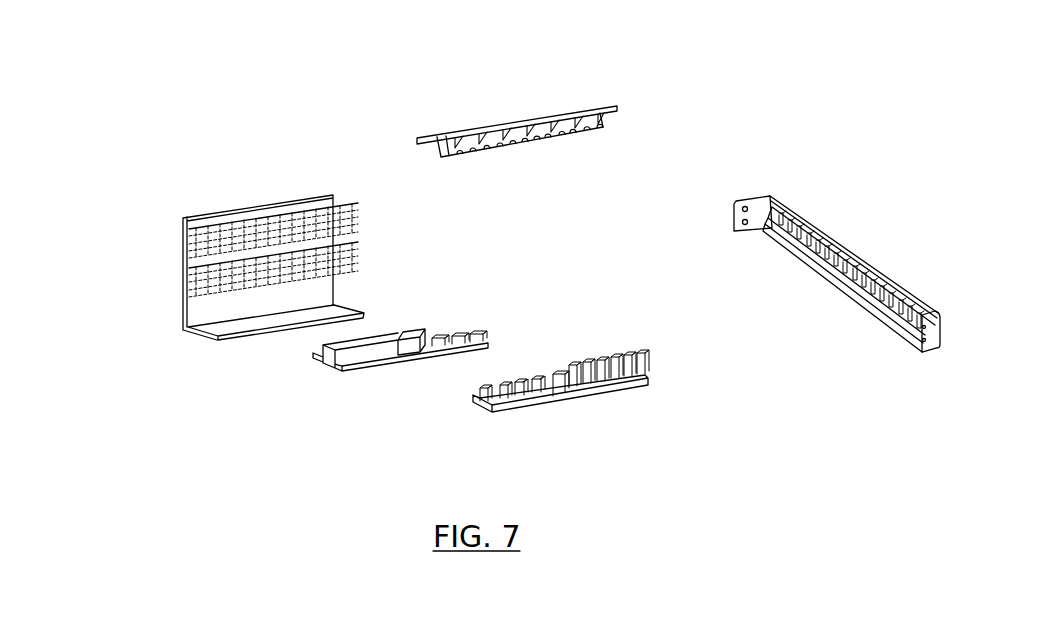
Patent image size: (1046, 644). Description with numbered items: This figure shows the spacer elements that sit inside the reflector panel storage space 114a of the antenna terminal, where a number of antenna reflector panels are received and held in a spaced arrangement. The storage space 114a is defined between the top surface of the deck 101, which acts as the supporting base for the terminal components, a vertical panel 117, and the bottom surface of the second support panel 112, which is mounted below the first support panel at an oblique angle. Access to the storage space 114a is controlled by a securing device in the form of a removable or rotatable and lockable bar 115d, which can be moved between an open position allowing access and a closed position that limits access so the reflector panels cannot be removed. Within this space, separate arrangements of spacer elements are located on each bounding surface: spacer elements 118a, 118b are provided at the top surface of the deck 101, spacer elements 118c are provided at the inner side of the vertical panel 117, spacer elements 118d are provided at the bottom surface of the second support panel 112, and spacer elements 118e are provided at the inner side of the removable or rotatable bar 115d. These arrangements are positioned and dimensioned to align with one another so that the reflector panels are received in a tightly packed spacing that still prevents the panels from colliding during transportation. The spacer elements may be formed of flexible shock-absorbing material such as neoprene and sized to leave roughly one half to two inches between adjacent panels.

The deck 101 is at (402, 400).
The second support panel 112 is at (367, 158).
The reflector panel storage space 114a is at (752, 98).
The removable or rotatable and lockable bar 115d is at (785, 195).
The vertical panel 117 is at (160, 231).
The spacer elements 118a is at (567, 392).
The spacer elements 118b is at (323, 355).
The spacer elements 118c is at (272, 240).
The spacer elements 118d is at (543, 131).
The spacer elements 118e is at (811, 261).